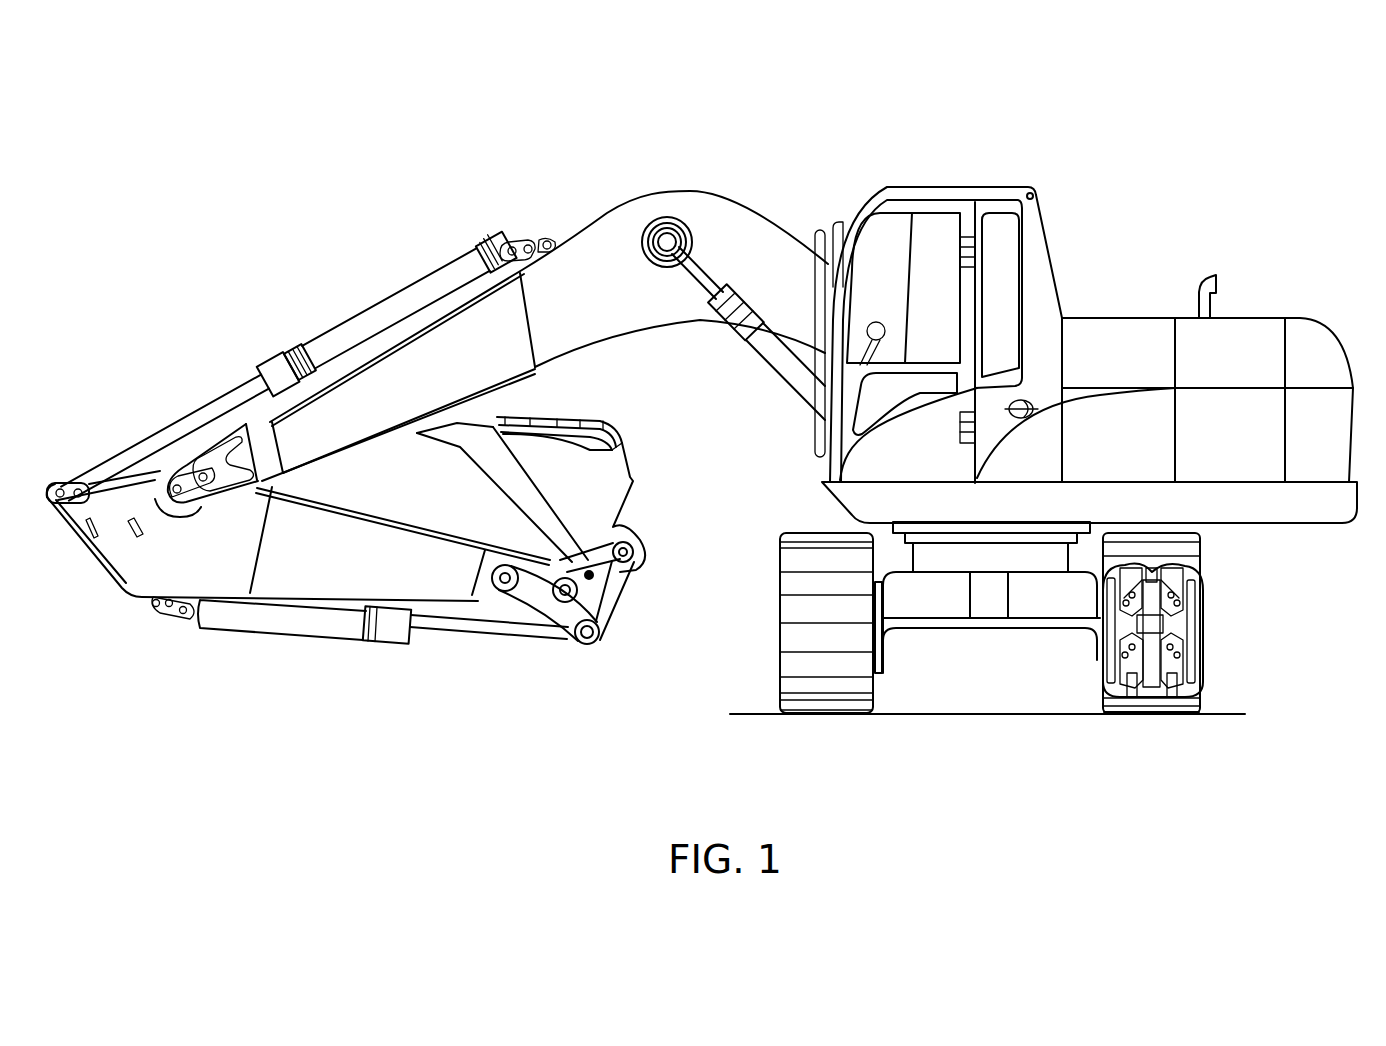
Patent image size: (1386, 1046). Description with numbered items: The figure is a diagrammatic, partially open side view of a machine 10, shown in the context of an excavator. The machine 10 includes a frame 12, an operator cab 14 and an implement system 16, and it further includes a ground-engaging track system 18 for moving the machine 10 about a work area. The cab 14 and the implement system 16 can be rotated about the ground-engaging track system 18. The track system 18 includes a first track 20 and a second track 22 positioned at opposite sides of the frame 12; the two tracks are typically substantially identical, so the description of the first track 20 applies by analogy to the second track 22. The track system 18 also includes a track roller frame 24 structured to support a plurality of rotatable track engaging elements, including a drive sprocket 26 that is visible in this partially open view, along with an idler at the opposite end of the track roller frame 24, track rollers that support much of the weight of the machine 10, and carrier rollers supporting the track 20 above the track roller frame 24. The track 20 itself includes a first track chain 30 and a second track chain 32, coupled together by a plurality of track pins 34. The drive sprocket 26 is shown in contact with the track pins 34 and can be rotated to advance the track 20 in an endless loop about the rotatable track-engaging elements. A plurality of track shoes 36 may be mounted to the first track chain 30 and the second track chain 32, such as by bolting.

The machine 10 is at (702, 443).
The frame 12 is at (1087, 525).
The operator cab 14 is at (1060, 272).
The implement system 16 is at (99, 570).
The ground-engaging track system 18 is at (1060, 626).
The first track 20 is at (1112, 713).
The second track 22 is at (878, 713).
The track roller frame 24 is at (1180, 592).
The drive sprocket 26 is at (1155, 647).
The first track chain 30 is at (1125, 562).
The second track chain 32 is at (1175, 561).
The track pins 34 is at (1148, 566).
The track shoes 36 is at (1203, 700).